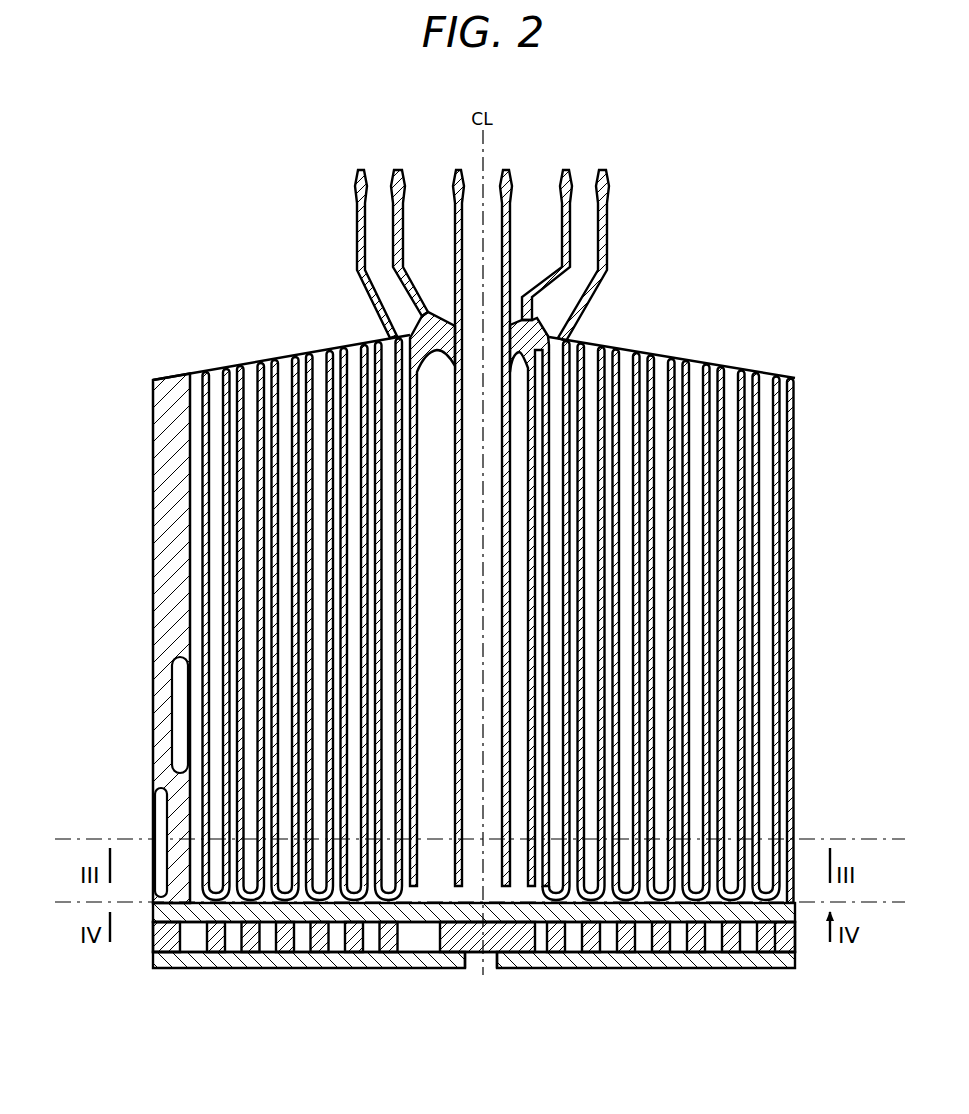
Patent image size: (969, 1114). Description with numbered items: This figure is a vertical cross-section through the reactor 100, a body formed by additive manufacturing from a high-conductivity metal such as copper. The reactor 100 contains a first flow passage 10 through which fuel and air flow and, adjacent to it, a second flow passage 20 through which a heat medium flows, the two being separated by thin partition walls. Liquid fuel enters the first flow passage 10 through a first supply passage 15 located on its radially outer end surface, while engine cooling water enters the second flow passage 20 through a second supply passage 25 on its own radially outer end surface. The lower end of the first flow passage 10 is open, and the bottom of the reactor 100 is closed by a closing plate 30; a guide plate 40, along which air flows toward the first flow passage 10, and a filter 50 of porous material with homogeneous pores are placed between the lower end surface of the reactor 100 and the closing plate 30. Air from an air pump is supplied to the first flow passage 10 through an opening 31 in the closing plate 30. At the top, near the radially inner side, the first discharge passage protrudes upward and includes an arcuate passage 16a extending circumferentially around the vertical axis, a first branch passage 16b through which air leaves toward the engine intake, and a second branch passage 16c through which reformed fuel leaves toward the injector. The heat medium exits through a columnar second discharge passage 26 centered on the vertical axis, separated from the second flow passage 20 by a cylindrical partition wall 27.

The reactor 100 is at (797, 372).
The first flow passage 10 is at (372, 900).
The first supply passage 15 is at (160, 812).
The arcuate passage 16a is at (417, 296).
The first branch passage 16b is at (607, 226).
The second branch passage 16c is at (357, 228).
The second flow passage 20 is at (399, 338).
The second supply passage 25 is at (176, 712).
The second discharge passage 26 is at (490, 165).
The cylindrical partition wall 27 is at (508, 175).
The closing plate 30 is at (796, 948).
The opening 31 is at (490, 964).
The guide plate 40 is at (800, 964).
The filter 50 is at (538, 920).